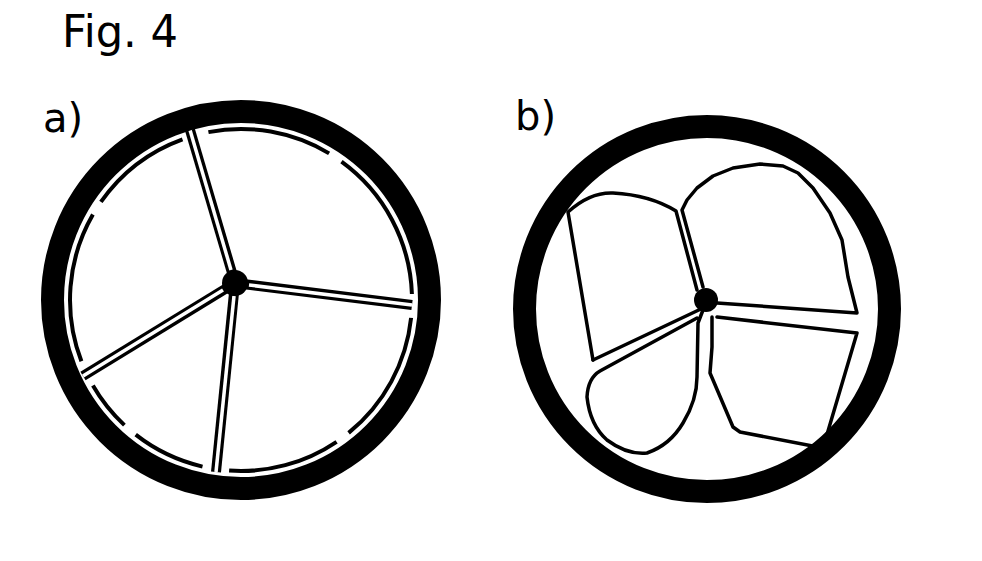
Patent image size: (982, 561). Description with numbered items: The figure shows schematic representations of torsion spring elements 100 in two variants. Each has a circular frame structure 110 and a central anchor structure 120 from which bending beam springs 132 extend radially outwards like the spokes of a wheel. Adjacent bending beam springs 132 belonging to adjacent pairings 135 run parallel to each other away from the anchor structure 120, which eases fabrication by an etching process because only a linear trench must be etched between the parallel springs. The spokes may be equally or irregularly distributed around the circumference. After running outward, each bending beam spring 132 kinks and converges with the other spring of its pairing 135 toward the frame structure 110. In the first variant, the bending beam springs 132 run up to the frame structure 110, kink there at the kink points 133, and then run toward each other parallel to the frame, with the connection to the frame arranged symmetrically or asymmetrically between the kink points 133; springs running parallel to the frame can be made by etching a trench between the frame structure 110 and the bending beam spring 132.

The prosthetic valve 100 is at (312, 78).
The frame structure 110 is at (123, 463).
The anchor structure 120 is at (245, 280).
The bending beam springs 132 is at (323, 313).
The kink points 133 is at (207, 457).
The pairings 135 is at (212, 270).